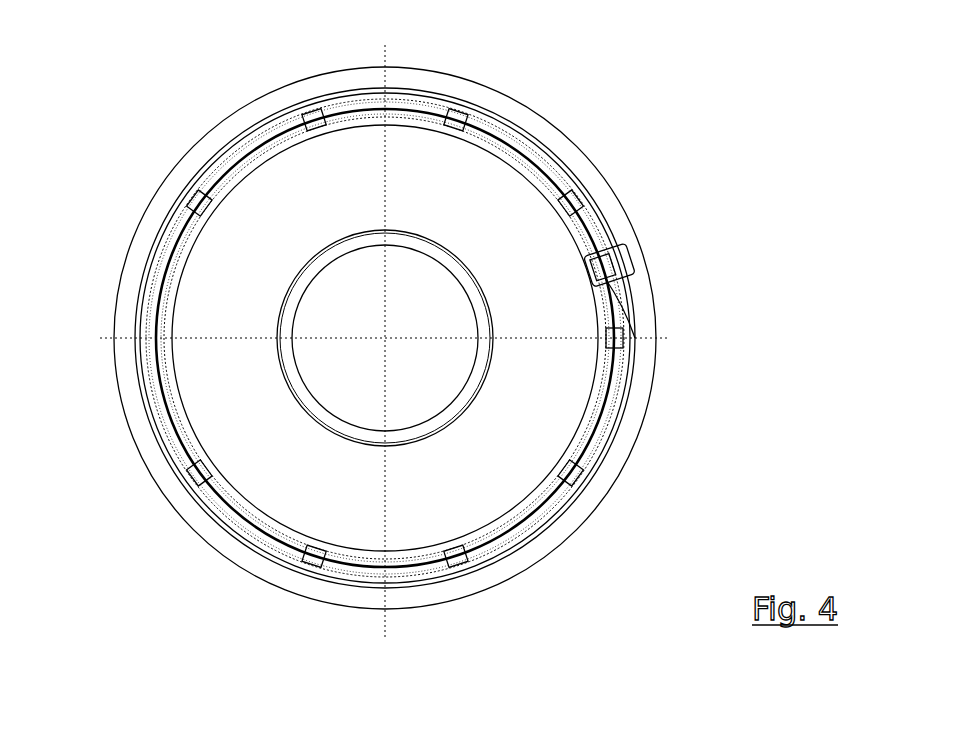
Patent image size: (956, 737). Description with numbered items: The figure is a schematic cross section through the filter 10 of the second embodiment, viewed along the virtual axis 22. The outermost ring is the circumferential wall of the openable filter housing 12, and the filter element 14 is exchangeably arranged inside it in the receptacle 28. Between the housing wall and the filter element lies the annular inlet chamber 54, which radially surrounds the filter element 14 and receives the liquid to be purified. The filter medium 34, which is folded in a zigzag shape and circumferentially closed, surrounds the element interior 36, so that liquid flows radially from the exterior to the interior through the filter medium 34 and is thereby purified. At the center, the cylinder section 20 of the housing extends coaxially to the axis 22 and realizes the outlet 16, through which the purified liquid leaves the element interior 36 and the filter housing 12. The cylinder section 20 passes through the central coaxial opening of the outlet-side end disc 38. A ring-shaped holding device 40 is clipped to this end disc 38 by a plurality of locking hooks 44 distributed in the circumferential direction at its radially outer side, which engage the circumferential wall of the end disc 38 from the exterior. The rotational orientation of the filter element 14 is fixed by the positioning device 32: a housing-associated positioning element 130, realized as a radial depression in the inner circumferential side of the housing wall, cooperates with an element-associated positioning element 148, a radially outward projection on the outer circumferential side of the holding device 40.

The filter 10 is at (126, 104).
The filter housing 12 is at (122, 280).
The filter element 14 is at (299, 182).
The outlet 16 is at (412, 390).
The cylinder section 20 is at (329, 418).
The axis 22 is at (383, 336).
The receptacle 28 is at (630, 407).
The positioning device 32 is at (640, 282).
The filter medium 34 is at (349, 158).
The element interior 36 is at (413, 310).
The end disc 38 is at (583, 443).
The holding device 40 is at (631, 355).
The locking hooks 44 is at (194, 209).
The annular inlet chamber 54 is at (578, 163).
The housing-associated positioning element 130 is at (638, 250).
The element-associated positioning element 148 is at (622, 266).